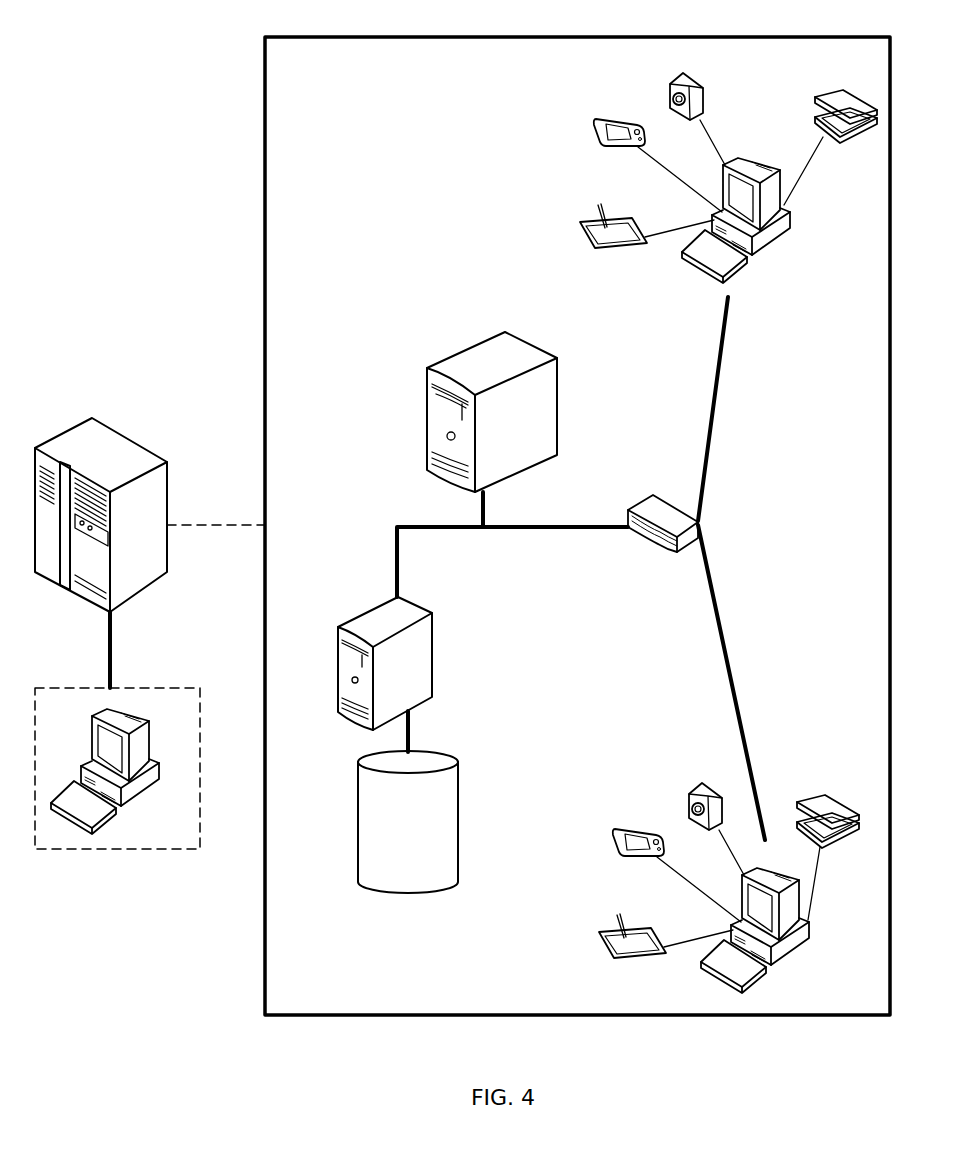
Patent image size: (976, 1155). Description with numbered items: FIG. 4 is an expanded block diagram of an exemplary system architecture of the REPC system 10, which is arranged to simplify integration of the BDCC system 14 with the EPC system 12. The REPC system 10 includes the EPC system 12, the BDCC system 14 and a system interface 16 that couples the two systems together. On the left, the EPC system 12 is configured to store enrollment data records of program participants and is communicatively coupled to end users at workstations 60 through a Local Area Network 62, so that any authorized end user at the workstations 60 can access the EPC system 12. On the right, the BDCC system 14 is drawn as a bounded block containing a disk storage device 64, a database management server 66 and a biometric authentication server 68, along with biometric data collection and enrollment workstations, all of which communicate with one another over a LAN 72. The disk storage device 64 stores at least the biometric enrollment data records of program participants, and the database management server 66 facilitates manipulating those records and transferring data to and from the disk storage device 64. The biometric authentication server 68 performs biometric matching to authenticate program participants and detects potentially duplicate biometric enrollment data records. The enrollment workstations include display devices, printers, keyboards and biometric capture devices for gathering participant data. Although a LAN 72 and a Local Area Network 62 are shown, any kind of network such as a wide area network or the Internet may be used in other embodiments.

The REPC system 10 is at (150, 107).
The EPC system 12 is at (92, 418).
The BDCC system 14 is at (263, 216).
The system interface 16 is at (215, 515).
The workstation 60 is at (117, 851).
The Local Area Network 62 is at (108, 640).
The disk storage device 64 is at (425, 822).
The database management server 66 is at (410, 663).
The biometric authentication server 68 is at (520, 412).
The LAN 72 is at (561, 535).